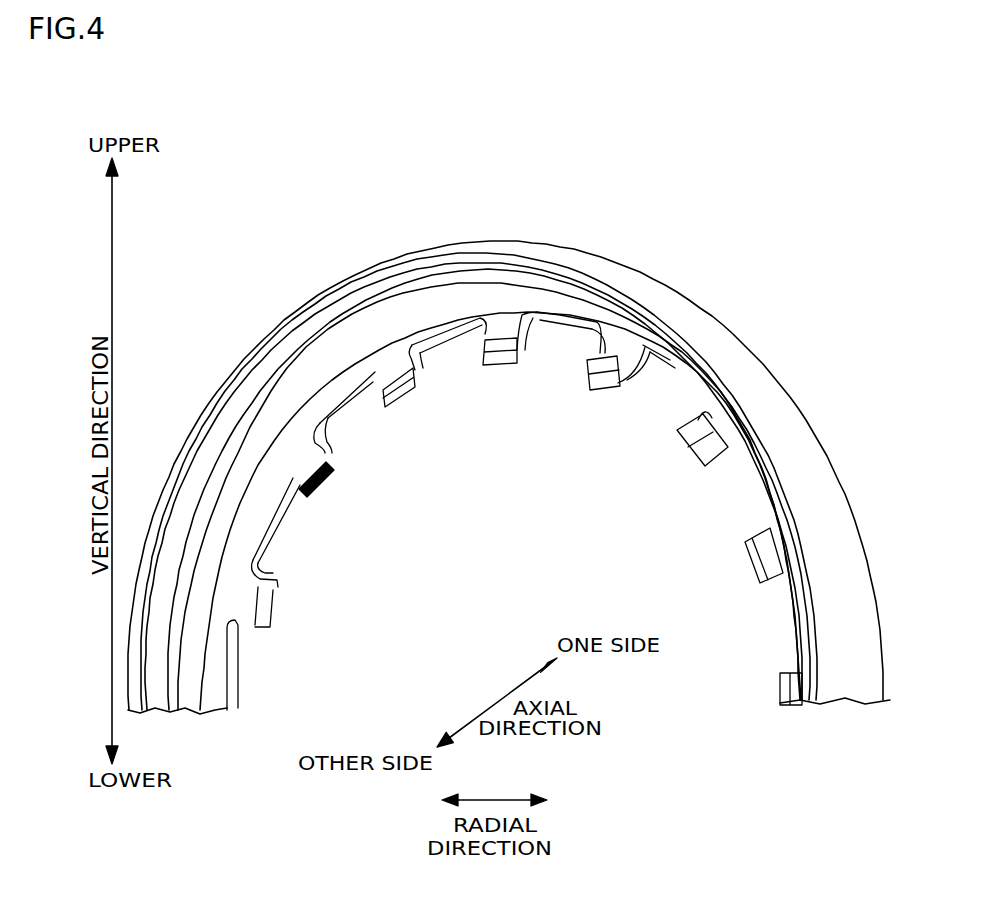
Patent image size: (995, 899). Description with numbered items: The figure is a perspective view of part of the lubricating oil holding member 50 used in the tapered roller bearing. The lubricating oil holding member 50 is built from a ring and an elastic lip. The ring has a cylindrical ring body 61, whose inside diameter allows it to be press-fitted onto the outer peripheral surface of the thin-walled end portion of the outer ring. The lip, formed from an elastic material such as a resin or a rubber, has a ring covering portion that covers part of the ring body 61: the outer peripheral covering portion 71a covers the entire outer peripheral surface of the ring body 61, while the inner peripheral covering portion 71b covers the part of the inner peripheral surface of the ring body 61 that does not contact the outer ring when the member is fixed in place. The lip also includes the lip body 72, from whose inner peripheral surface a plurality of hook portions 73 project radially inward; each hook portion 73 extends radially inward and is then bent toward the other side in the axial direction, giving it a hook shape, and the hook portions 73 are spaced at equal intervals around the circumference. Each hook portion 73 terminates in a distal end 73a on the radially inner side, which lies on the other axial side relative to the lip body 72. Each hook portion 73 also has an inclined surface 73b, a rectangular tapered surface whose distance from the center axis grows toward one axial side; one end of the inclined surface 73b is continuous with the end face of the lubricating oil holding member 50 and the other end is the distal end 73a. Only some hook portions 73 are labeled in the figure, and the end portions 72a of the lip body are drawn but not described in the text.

The lubricating oil holding member 50 is at (729, 243).
The ring body 61 is at (257, 383).
The outer peripheral covering portion 71a is at (363, 267).
The inner peripheral covering portion 71b is at (195, 627).
The lip body 72 is at (338, 382).
The tab end portion 72a is at (343, 413).
The hook portion 73 is at (473, 352).
The distal end 73a is at (492, 365).
The inclined surface 73b is at (525, 355).